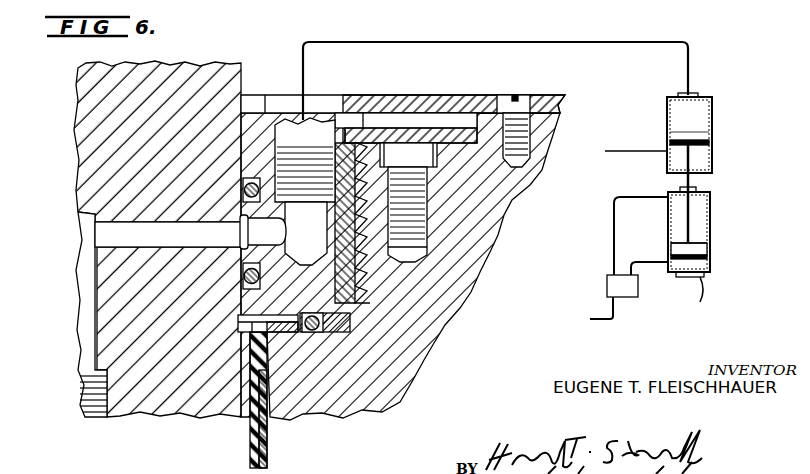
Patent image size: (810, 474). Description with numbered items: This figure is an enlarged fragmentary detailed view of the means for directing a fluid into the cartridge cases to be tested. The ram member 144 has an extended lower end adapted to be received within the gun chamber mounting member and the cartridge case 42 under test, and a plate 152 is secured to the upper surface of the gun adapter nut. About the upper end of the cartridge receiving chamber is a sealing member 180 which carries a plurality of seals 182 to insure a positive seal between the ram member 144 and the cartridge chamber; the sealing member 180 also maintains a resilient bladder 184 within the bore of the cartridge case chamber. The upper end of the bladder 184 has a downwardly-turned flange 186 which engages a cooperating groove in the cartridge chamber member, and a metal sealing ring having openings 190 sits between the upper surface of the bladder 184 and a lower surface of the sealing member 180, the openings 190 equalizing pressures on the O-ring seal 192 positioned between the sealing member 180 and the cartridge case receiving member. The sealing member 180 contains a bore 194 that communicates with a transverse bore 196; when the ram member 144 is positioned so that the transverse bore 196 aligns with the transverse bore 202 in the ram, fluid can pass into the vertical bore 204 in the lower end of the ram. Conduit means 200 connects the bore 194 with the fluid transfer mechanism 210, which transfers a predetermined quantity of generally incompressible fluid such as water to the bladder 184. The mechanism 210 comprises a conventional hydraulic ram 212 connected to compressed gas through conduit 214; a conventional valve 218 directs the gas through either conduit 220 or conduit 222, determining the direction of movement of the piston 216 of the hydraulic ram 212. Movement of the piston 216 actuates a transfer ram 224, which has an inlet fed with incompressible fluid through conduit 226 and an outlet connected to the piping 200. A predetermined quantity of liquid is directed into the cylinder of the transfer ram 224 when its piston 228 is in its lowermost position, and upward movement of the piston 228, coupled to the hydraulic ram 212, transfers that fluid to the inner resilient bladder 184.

The ram member 144 is at (157, 227).
The conduit means 200 is at (302, 82).
The plate 152 is at (403, 81).
The seals 182 is at (220, 221).
The transverse bore 202 is at (148, 244).
The transverse bore 196 is at (278, 240).
The bore 194 is at (322, 240).
The vertical bore 204 is at (71, 314).
The openings 190 is at (237, 326).
The sealing member 180 is at (368, 266).
The resilient bladder 184 is at (232, 400).
The cartridge case 42 is at (267, 438).
The downwardly-turned flange 186 is at (287, 352).
The O-ring seal 192 is at (388, 279).
The conduit 226 is at (635, 150).
The piston 228 is at (710, 176).
The transfer ram 224 is at (712, 150).
The fluid transfer mechanism 210 is at (736, 170).
The conduit 222 is at (612, 226).
The conduit 220 is at (646, 260).
The hydraulic ram 212 is at (711, 228).
The conduit 214 is at (614, 314).
The valve 218 is at (638, 288).
The piston 216 is at (711, 300).